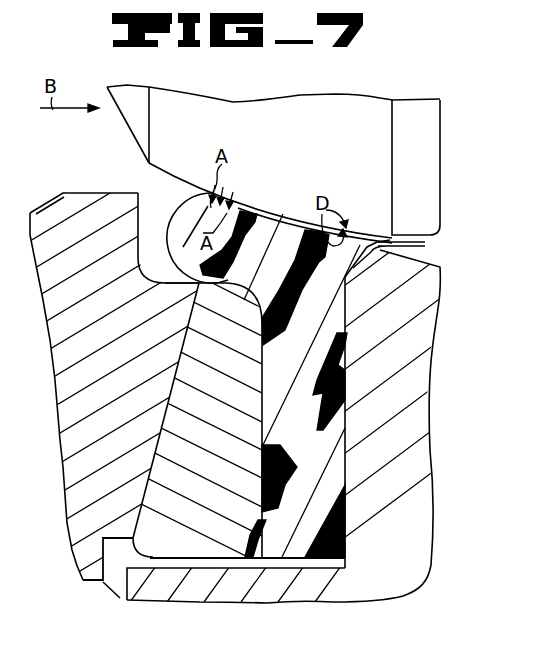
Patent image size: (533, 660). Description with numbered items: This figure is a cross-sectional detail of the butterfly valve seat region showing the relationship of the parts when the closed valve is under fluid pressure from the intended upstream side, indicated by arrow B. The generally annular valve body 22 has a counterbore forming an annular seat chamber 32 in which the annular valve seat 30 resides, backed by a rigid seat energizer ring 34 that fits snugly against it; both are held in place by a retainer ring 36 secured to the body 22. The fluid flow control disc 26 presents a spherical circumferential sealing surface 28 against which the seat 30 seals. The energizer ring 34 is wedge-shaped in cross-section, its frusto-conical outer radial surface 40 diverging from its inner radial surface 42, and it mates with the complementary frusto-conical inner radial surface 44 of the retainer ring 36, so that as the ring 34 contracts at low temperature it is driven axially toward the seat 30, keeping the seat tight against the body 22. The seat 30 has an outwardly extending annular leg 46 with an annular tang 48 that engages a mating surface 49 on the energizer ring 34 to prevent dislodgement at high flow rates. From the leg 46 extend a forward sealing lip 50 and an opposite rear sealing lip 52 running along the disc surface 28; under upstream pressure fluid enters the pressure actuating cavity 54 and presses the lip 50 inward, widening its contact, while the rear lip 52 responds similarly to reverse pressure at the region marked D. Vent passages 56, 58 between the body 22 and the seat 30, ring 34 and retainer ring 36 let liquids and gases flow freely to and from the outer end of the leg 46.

The valve body 22 is at (377, 591).
The fluid flow control disc 26 is at (138, 130).
The circumferential sealing surface 28 is at (307, 172).
The annular valve seat 30 is at (340, 348).
The annular seat chamber 32 is at (337, 380).
The seat energizer ring 34 is at (250, 358).
The retainer ring 36 is at (126, 324).
The outer radial surface 40 is at (145, 490).
The inner radial surface 42 is at (263, 453).
The inner radial surface 44 is at (137, 515).
The annular leg 46 is at (318, 418).
The annular tang 48 is at (257, 520).
The mating surface 49 is at (257, 518).
The forward sealing lip 50 is at (188, 202).
The rear sealing lip 52 is at (395, 247).
The pressure actuating cavity 54 is at (150, 250).
The vent passage 56 is at (190, 565).
The vent passage 58 is at (118, 602).